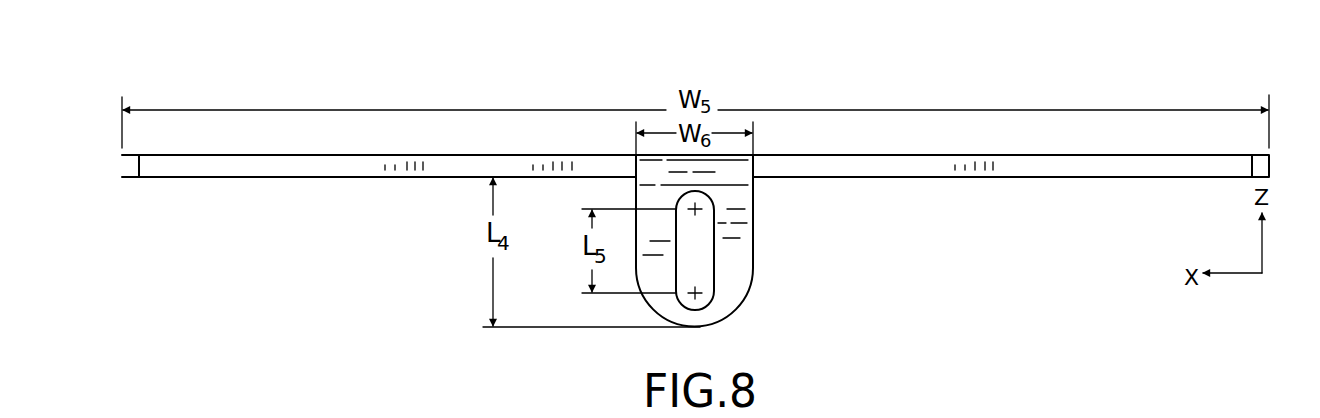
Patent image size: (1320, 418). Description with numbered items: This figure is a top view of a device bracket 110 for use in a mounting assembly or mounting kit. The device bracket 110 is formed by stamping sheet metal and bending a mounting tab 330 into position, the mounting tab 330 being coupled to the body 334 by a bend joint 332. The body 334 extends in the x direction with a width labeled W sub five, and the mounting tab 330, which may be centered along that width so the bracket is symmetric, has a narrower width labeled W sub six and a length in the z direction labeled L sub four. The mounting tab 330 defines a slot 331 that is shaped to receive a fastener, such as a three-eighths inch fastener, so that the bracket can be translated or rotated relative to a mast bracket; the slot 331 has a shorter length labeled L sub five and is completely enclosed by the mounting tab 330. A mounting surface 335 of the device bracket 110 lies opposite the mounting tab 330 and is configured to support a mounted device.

The device bracket 110 is at (175, 94).
The mounting tab 330 is at (735, 267).
The slot 331 is at (713, 252).
The bend joint 332 is at (737, 165).
The body 334 is at (1077, 167).
The mounting surface 335 is at (877, 154).